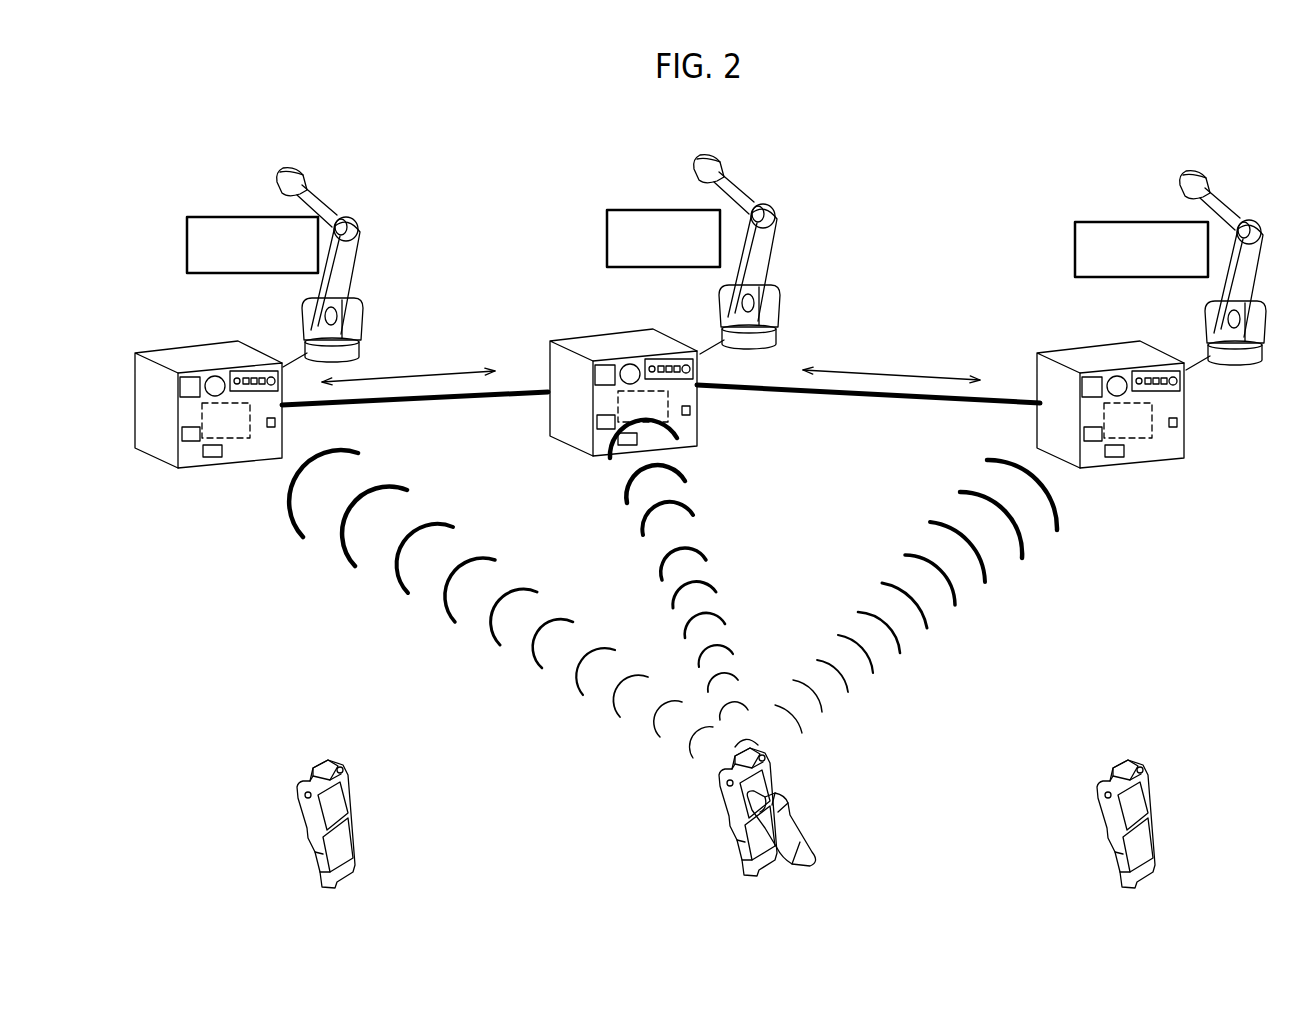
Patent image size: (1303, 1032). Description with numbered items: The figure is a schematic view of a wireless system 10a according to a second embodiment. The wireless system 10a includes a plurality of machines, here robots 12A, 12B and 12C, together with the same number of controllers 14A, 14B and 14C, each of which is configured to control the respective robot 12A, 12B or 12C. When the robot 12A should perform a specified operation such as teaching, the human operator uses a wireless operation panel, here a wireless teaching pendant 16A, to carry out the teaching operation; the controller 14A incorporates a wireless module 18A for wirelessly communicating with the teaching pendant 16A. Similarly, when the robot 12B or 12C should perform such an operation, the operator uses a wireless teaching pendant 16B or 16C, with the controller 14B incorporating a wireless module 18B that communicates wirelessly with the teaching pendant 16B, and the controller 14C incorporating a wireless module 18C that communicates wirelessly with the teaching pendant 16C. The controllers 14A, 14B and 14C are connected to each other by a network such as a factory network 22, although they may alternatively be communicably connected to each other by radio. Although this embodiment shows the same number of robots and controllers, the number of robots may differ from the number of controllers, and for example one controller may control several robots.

The wireless system 10a is at (240, 153).
The robot 12A is at (347, 188).
The robot 12B is at (753, 175).
The robot 12C is at (1165, 172).
The controller 14A is at (153, 474).
The controller 14B is at (566, 457).
The controller 14C is at (1128, 482).
The wireless teaching pendant 16A is at (295, 820).
The wireless teaching pendant 16B is at (715, 807).
The wireless teaching pendant 16C is at (1095, 820).
The wireless module 18A is at (243, 440).
The wireless module 18B is at (697, 399).
The wireless module 18C is at (1143, 440).
The factory network 22 is at (522, 392).